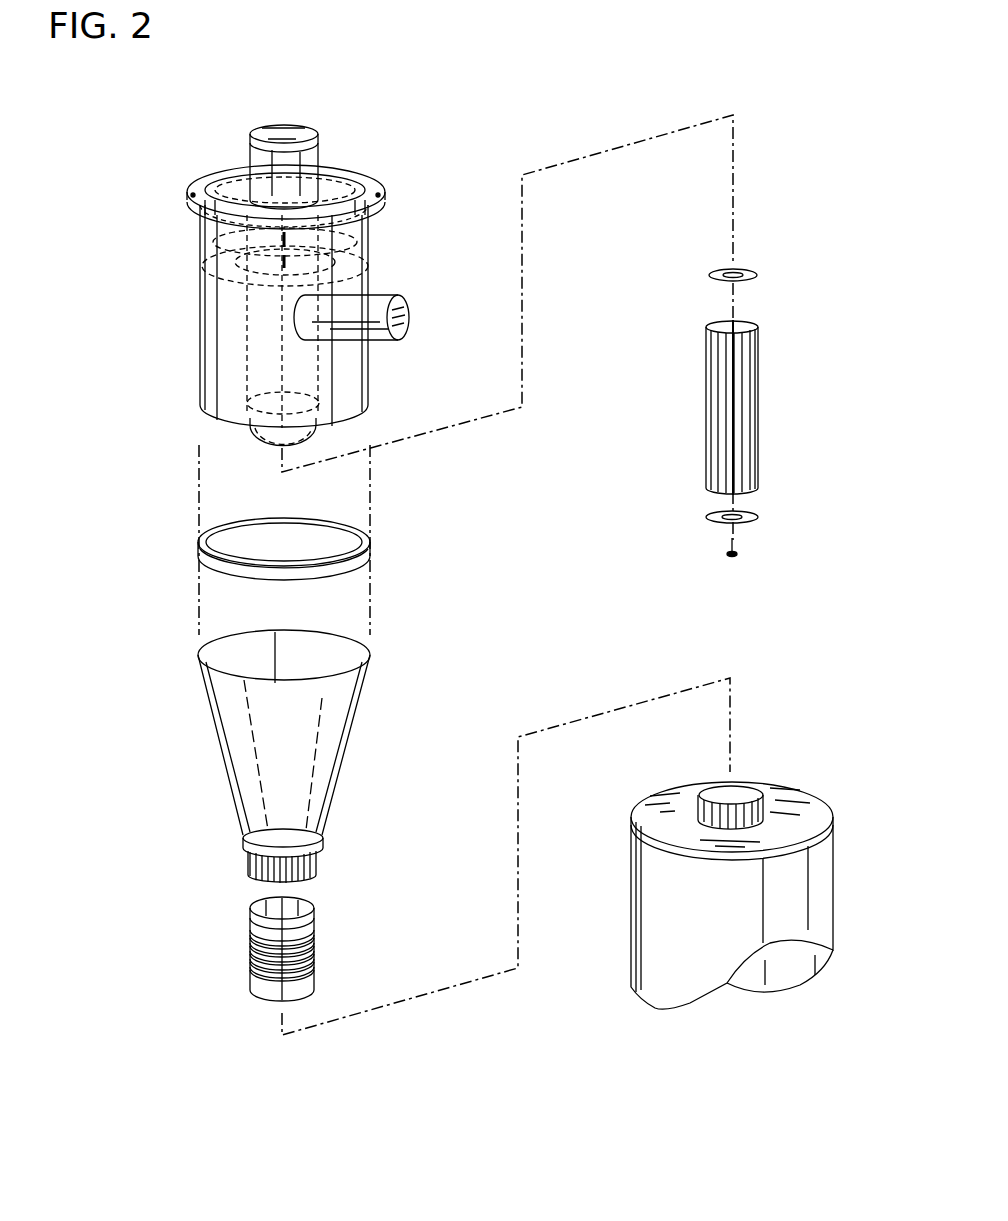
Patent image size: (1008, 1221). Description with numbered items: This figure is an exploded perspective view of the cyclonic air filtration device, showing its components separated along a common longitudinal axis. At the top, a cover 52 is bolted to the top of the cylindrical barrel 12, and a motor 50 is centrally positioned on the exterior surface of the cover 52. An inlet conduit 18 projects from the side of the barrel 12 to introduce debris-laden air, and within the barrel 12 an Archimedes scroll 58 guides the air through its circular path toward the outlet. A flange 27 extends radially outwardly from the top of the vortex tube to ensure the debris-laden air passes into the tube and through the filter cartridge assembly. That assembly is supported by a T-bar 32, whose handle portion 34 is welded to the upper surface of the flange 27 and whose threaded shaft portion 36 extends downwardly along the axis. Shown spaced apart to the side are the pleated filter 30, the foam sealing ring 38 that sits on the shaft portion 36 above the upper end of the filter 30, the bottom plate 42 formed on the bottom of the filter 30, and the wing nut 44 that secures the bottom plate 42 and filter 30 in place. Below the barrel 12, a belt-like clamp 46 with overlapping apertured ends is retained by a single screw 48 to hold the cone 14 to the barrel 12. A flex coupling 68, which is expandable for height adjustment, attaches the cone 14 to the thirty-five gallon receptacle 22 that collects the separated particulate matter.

The cylindrical barrel 12 is at (215, 352).
The cone 14 is at (215, 727).
The inlet conduit 18 is at (387, 320).
The receptacle 22 is at (655, 875).
The flange 27 is at (353, 260).
The pleated filter 30 is at (757, 415).
The T-bar 32 is at (290, 381).
The handle portion 34 is at (317, 243).
The shaft portion 36 is at (312, 405).
The foam sealing ring 38 is at (757, 274).
The bottom plate 42 is at (752, 515).
The wing nut 44 is at (737, 554).
The clamp 46 is at (367, 558).
The screw 48 is at (373, 535).
The motor 50 is at (283, 128).
The cover 52 is at (357, 175).
The Archimedes scroll 58 is at (202, 252).
The flex coupling 68 is at (310, 950).